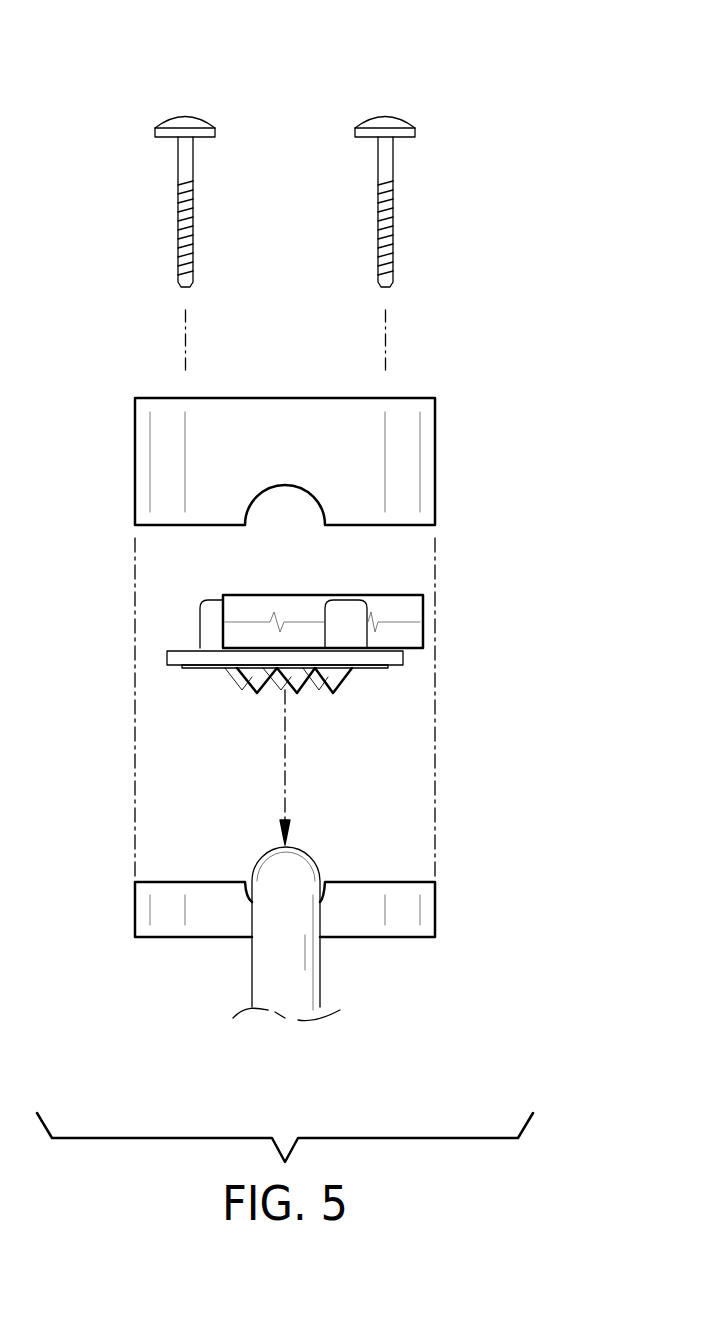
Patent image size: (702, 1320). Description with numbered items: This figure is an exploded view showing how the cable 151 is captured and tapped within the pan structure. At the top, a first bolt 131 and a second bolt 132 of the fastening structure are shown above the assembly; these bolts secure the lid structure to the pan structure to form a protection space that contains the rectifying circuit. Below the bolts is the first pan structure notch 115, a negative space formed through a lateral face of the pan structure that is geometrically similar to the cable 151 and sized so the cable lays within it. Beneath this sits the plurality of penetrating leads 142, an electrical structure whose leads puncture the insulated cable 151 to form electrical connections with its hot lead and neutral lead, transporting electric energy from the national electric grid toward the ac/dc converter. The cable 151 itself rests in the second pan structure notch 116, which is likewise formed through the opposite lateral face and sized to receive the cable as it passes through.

The first bolt 131 is at (183, 118).
The second bolt 132 is at (380, 118).
The first pan structure notch 115 is at (302, 487).
The plurality of penetrating leads 142 is at (333, 690).
The cable 151 is at (293, 868).
The second pan structure notch 116 is at (325, 893).